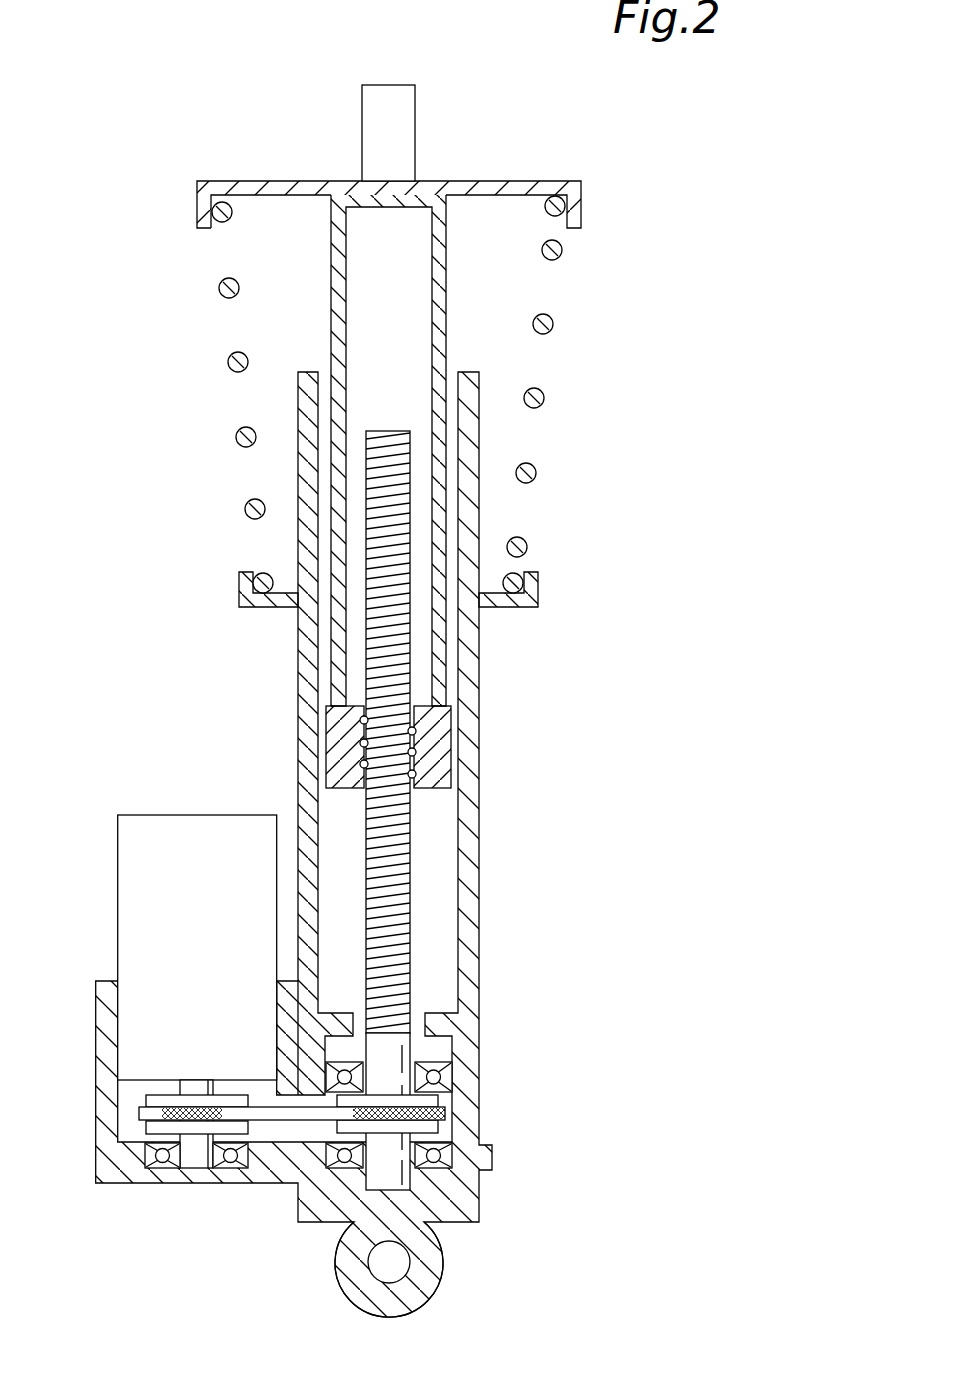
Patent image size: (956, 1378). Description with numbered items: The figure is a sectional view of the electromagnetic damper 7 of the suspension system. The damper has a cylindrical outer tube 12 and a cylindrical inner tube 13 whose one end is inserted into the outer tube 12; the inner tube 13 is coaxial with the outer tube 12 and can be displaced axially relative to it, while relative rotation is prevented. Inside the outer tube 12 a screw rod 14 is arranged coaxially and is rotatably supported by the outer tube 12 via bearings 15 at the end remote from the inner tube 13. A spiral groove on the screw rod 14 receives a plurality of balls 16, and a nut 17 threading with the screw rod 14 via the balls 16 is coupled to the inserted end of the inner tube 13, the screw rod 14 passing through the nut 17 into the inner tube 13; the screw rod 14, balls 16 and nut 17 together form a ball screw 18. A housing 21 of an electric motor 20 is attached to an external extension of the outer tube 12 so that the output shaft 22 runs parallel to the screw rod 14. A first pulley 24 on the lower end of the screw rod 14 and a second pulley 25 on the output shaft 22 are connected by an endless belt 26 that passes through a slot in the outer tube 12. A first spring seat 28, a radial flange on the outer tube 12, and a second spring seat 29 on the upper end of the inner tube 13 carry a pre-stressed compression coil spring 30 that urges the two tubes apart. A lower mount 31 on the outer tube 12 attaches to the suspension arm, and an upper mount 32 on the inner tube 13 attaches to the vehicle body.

The electromagnetic damper 7 is at (229, 124).
The outer tube 12 is at (470, 870).
The inner tube 13 is at (442, 268).
The screw rod 14 is at (400, 915).
The bearings 15 is at (447, 1072).
The balls 16 is at (414, 731).
The nut 17 is at (437, 716).
The ball screw 18 is at (447, 810).
The electric motor 20 is at (166, 982).
The housing 21 is at (128, 888).
The output shaft 22 is at (195, 1162).
The first pulley 24 is at (385, 1127).
The second pulley 25 is at (155, 1100).
The endless belt 26 is at (272, 1114).
The first spring seat 28 is at (532, 588).
The second spring seat 29 is at (576, 210).
The compression coil spring 30 is at (545, 396).
The lower mount 31 is at (422, 1284).
The upper mount 32 is at (403, 112).